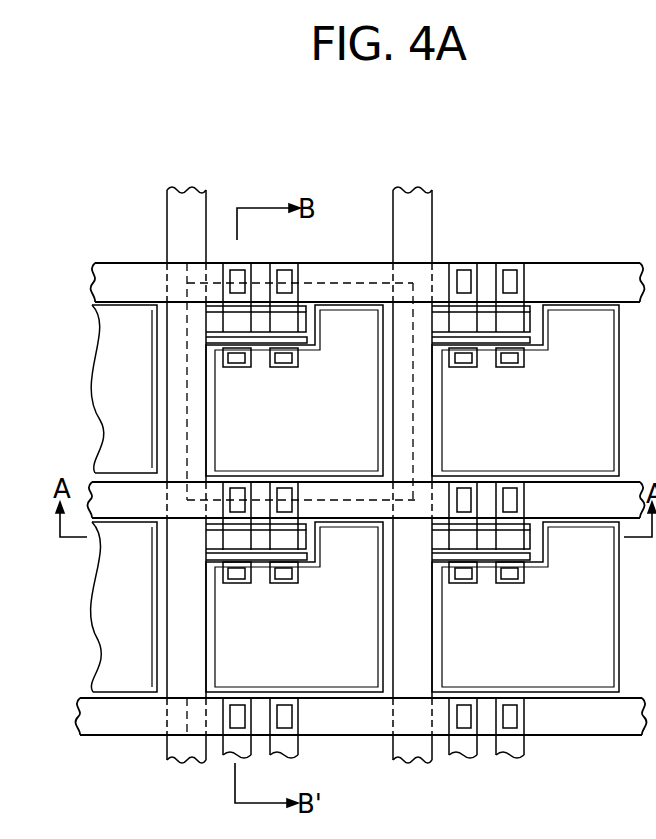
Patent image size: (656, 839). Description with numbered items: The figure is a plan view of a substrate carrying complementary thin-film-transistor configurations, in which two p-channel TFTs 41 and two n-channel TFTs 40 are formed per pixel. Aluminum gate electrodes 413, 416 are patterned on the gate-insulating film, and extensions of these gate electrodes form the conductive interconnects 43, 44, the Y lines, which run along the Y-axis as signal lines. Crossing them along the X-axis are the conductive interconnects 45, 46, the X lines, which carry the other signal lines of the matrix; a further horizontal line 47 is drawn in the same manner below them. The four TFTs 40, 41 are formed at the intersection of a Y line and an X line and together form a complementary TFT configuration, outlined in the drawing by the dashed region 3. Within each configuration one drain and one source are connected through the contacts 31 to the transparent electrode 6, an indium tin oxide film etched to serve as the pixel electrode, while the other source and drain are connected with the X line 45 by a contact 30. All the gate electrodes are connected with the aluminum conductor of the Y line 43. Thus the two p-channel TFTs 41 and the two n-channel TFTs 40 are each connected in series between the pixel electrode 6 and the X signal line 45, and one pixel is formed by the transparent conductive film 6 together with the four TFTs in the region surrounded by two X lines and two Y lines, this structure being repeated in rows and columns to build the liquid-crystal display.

The thin film transistor region 3 is at (357, 262).
The transparent electrode 6 is at (379, 312).
The contact 30 is at (300, 272).
The contacts 31 is at (235, 363).
The n-channel TFT 40 is at (298, 262).
The p-channel TFT 41 is at (223, 262).
The conductive interconnect 43 is at (184, 202).
The conductive interconnect 44 is at (412, 204).
The conductive interconnect 45 is at (128, 270).
The conductive interconnect 46 is at (92, 488).
The scan line 47 is at (122, 728).
The gate electrode 413 is at (306, 318).
The gate electrode 416 is at (307, 341).